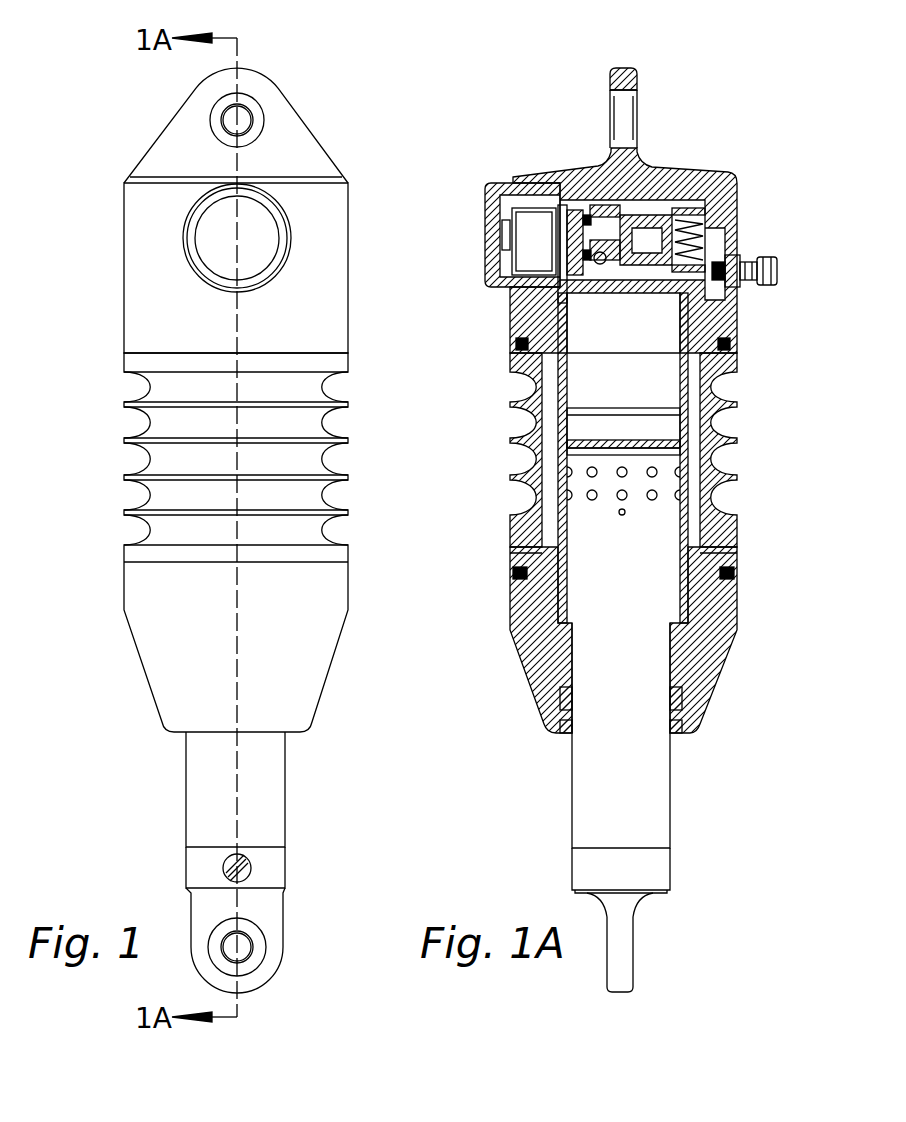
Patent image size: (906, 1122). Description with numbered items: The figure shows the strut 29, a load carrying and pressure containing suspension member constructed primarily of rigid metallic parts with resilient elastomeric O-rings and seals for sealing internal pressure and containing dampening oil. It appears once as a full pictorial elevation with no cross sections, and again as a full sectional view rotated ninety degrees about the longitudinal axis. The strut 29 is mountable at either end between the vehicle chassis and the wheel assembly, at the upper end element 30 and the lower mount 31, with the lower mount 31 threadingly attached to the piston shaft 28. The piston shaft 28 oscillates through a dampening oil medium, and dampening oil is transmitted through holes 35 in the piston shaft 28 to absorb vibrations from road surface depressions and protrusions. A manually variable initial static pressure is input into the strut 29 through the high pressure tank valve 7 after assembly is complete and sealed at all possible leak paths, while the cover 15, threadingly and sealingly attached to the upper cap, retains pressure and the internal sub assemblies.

In FIG. 1A, the high pressure tank valve 7 is at (766, 278).
In FIG. 1, the cover 15 is at (188, 266).
In FIG. 1, the piston shaft 28 is at (208, 793).
In FIG. 1A, the piston shaft 28 is at (613, 797).
In FIG. 1, the strut 29 is at (157, 113).
In FIG. 1, the upper mounting eye 30 is at (258, 110).
In FIG. 1A, the upper mounting eye 30 is at (618, 108).
In FIG. 1, the lower mount 31 is at (248, 966).
In FIG. 1A, the lower mount 31 is at (638, 945).
In FIG. 1A, the holes 35 is at (617, 500).